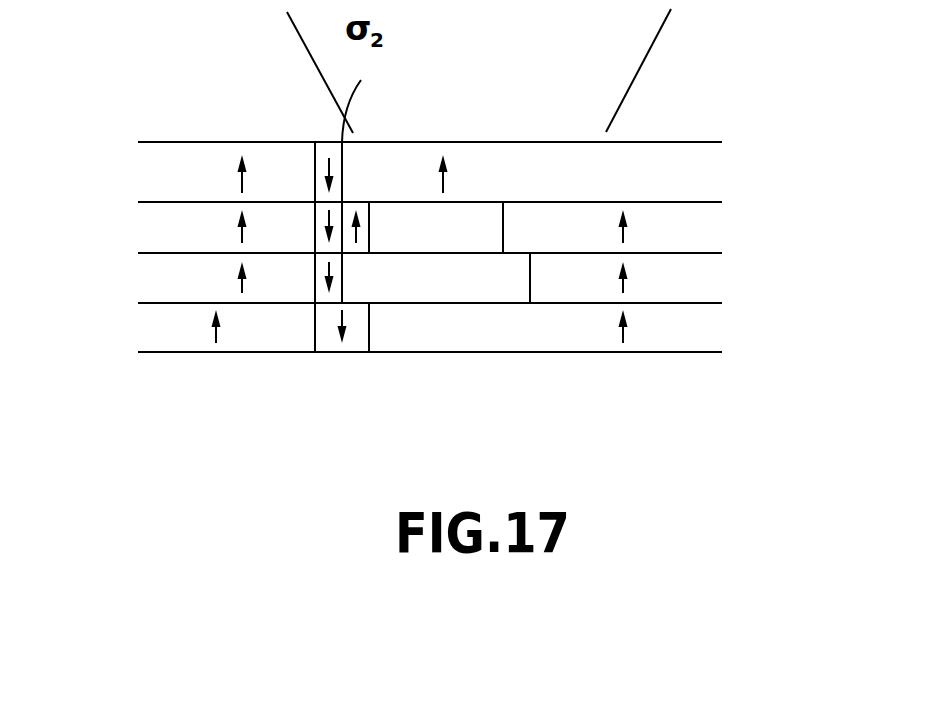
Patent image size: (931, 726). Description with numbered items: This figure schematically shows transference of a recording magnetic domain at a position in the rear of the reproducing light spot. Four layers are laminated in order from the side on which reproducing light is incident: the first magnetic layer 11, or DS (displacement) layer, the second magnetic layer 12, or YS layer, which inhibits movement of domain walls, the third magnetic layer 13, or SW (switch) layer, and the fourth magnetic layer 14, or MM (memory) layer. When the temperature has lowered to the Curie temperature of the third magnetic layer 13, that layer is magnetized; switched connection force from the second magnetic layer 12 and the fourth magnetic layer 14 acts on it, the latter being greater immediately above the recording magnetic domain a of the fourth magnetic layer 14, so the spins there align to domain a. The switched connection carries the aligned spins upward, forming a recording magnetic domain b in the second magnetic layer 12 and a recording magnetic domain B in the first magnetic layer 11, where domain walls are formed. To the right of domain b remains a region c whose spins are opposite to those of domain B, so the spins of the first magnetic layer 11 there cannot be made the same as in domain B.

The first magnetic layer 11 is at (708, 168).
The second magnetic layer 12 is at (708, 226).
The third magnetic layer 13 is at (708, 278).
The fourth magnetic layer 14 is at (708, 330).
The recording magnetic domain a is at (353, 343).
The recording magnetic domain b is at (317, 212).
The recording magnetic domain B is at (330, 150).
The region c is at (368, 228).